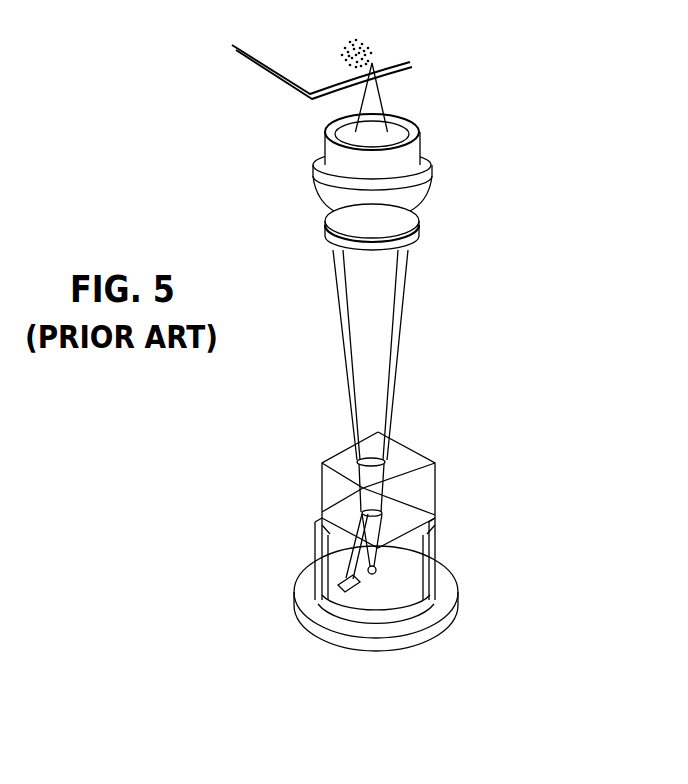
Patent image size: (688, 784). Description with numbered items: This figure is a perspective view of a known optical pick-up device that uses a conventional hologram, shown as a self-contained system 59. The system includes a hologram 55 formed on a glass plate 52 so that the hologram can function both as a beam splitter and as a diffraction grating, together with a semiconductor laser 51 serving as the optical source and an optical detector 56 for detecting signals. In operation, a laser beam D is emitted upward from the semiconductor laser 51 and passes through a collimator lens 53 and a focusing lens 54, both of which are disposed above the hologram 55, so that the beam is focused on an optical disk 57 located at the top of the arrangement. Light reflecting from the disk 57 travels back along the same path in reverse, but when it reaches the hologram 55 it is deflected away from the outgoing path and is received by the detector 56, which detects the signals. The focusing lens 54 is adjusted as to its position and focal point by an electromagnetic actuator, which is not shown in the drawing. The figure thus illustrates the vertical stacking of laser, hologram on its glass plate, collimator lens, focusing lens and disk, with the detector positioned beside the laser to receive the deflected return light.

The semiconductor laser 51 is at (370, 537).
The glass plate 52 is at (365, 511).
The collimator lens 53 is at (330, 213).
The focusing lens 54 is at (320, 158).
The hologram 55 is at (355, 455).
The optical detector 56 is at (337, 586).
The optical disk 57 is at (237, 60).
The self-contained system 59 is at (444, 584).
The laser beam D is at (386, 384).